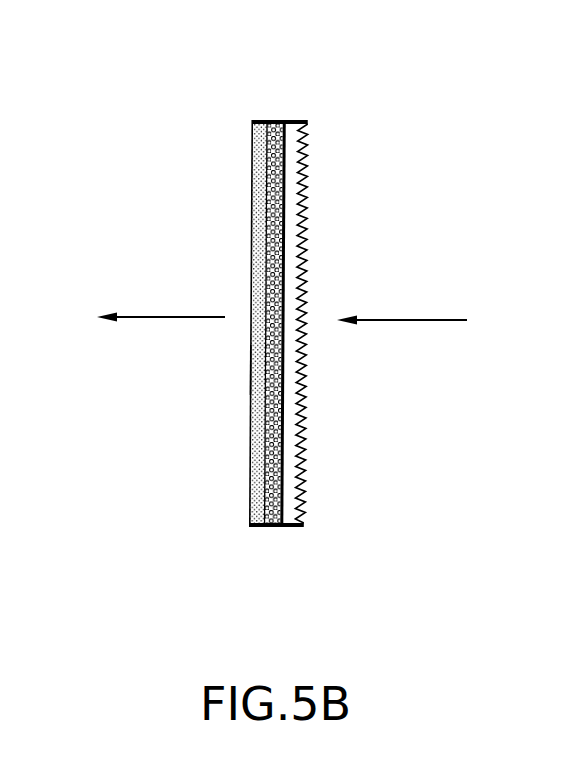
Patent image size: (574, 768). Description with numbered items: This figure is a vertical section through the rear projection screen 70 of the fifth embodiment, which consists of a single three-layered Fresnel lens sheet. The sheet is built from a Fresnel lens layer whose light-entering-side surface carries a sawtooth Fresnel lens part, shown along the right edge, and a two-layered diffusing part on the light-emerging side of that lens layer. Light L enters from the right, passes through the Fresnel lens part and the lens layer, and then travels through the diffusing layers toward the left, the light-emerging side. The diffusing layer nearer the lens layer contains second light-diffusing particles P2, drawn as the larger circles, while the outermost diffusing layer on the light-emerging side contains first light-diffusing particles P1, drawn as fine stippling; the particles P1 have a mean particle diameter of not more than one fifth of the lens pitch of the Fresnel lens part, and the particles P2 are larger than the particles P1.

The rear projection screen 70 is at (345, 140).
The first light-diffusing particles P1 is at (257, 369).
The second light-diffusing particles P2 is at (283, 368).
The light L is at (167, 317).